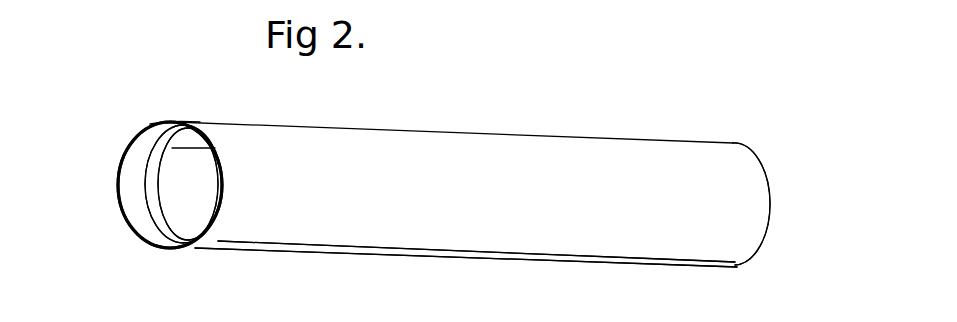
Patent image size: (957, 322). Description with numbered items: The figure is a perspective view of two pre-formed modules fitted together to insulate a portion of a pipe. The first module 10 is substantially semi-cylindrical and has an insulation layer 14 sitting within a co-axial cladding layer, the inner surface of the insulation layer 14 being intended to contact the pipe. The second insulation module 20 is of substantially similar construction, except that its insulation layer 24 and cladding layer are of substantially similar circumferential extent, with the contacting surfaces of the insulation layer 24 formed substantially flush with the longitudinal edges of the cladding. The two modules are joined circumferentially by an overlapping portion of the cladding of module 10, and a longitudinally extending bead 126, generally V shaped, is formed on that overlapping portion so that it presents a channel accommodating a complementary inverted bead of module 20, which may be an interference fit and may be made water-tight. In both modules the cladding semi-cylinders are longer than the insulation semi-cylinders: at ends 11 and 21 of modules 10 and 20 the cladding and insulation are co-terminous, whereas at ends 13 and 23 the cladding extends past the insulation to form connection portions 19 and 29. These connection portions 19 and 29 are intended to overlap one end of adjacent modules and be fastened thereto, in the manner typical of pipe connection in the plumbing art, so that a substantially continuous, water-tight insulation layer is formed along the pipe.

The module 10 is at (730, 152).
The end 11 is at (772, 183).
The end 13 is at (140, 132).
The insulation layer 14 is at (200, 122).
The connection portion 19 is at (167, 125).
The insulation module 20 is at (148, 232).
The end 21 is at (737, 265).
The end 23 is at (128, 228).
The insulation layer 24 is at (177, 233).
The connection portion 29 is at (137, 195).
The longitudinally extending bead 126 is at (337, 250).